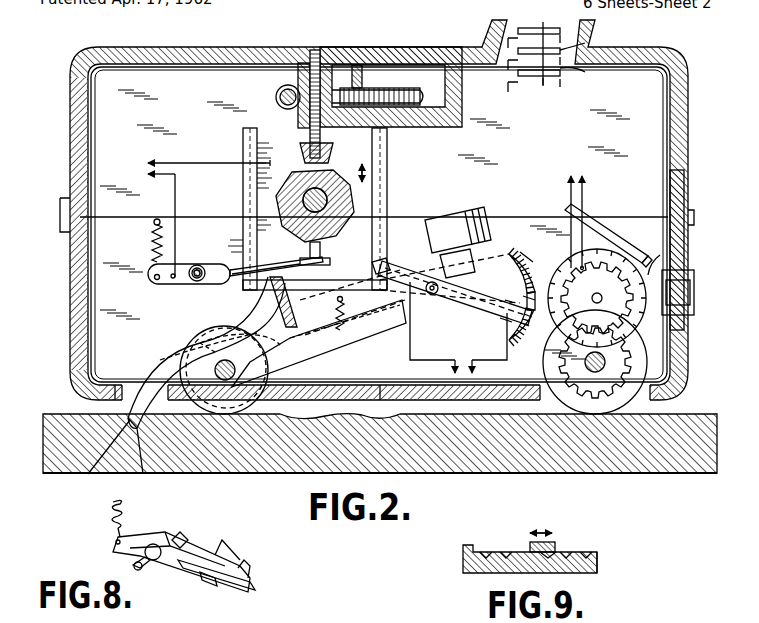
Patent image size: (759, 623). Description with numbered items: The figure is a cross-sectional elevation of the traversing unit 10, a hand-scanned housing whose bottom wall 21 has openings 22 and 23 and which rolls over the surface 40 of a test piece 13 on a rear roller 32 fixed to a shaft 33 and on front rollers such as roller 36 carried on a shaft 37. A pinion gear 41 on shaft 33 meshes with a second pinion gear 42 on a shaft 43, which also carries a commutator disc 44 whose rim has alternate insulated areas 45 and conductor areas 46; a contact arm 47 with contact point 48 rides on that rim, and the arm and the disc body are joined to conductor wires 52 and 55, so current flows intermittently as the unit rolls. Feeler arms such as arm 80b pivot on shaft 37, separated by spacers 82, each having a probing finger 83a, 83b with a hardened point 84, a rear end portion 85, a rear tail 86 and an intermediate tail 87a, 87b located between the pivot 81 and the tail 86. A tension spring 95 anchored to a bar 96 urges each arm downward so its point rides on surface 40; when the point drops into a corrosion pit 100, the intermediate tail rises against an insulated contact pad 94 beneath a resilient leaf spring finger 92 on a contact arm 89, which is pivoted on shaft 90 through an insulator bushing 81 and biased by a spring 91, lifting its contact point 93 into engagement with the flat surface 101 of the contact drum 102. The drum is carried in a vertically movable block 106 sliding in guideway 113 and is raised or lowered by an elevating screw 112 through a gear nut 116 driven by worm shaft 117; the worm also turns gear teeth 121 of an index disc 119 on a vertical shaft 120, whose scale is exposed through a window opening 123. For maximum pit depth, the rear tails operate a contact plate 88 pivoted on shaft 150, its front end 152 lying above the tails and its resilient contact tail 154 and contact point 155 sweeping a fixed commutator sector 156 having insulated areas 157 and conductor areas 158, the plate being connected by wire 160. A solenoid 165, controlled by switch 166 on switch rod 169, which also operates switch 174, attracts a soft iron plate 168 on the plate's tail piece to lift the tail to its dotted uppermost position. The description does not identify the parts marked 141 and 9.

In FIG. 2, the traversing unit 10 is at (68, 290).
In FIG. 2, the test piece 13 is at (455, 464).
In FIG. 2, the bottom wall 21 is at (395, 392).
In FIG. 2, the opening 22 is at (118, 385).
In FIG. 2, the opening 23 is at (640, 398).
In FIG. 2, the rear wheel roller 32 is at (544, 368).
In FIG. 2, the shaft 33 is at (595, 354).
In FIG. 2, the front wheel roller 36 is at (222, 418).
In FIG. 2, the shaft 37 is at (240, 345).
In FIG. 2, the surface 40 is at (708, 414).
In FIG. 2, the pinion gear 41 is at (622, 360).
In FIG. 2, the second pinion gear 42 is at (664, 312).
In FIG. 2, the shaft 43 is at (597, 294).
In FIG. 2, the commutator disc 44 is at (658, 256).
In FIG. 2, the insulated areas 45 is at (538, 272).
In FIG. 2, the conductor areas 46 is at (552, 274).
In FIG. 2, the contact arm 47 is at (604, 232).
In FIG. 2, the contact point 48 is at (645, 258).
In FIG. 2, the conductor wire 52 is at (568, 196).
In FIG. 2, the conductor wire 55 is at (584, 186).
In FIG. 2, the feeler arm 80b is at (185, 345).
In FIG. 2, the pivot 81 is at (192, 281).
In FIG. 8, the pivot 81 is at (155, 562).
In FIG. 2, the spacers 82 is at (225, 360).
In FIG. 2, the probing finger 83a is at (150, 372).
In FIG. 2, the probing finger 83b is at (168, 352).
In FIG. 2, the hardened point 84 is at (142, 462).
In FIG. 2, the rear end portion 85 is at (340, 350).
In FIG. 2, the rear tail portion 86 is at (410, 276).
In FIG. 2, the intermediate tail portion 87a is at (262, 283).
In FIG. 2, the intermediate tail portion 87b is at (294, 295).
In FIG. 2, the contact plate 88 is at (400, 278).
In FIG. 2, the contact arm 89 is at (224, 264).
In FIG. 8, the contact arm 89 is at (188, 530).
In FIG. 2, the shaft 90 is at (196, 265).
In FIG. 8, the shaft 90 is at (181, 532).
In FIG. 2, the spring 91 is at (153, 246).
In FIG. 8, the spring 91 is at (112, 514).
In FIG. 2, the resilient leaf spring finger 92 is at (157, 220).
In FIG. 8, the resilient leaf spring finger 92 is at (218, 565).
In FIG. 2, the contact point 93 is at (322, 255).
In FIG. 8, the contact point 93 is at (248, 566).
In FIG. 2, the contact pad 94 is at (272, 268).
In FIG. 8, the contact pad 94 is at (208, 582).
In FIG. 2, the tension spring 95 is at (346, 314).
In FIG. 2, the bar 96 is at (344, 299).
In FIG. 2, the corrosion pit 100 is at (97, 458).
In FIG. 2, the flat surface 101 is at (330, 238).
In FIG. 2, the contact drum 102 is at (336, 176).
In FIG. 2, the vertically movable block 106 is at (278, 150).
In FIG. 2, the threaded elevating screw 112 is at (315, 58).
In FIG. 2, the vertical guideway 113 is at (387, 157).
In FIG. 2, the gear nut 116 is at (355, 65).
In FIG. 2, the worm shaft 117 is at (285, 85).
In FIG. 2, the index disc 119 is at (376, 90).
In FIG. 2, the vertical shaft 120 is at (372, 88).
In FIG. 2, the gear teeth 121 is at (422, 96).
In FIG. 2, the window opening 123 is at (445, 65).
In FIG. 2, the terminal post 141 is at (548, 78).
In FIG. 2, the shaft 150 is at (432, 294).
In FIG. 2, the front end 152 is at (382, 262).
In FIG. 2, the resilient contact tail 154 is at (505, 310).
In FIG. 9, the resilient contact tail 154 is at (530, 546).
In FIG. 2, the contact point 155 is at (491, 336).
In FIG. 9, the contact point 155 is at (556, 545).
In FIG. 2, the commutator sector 156 is at (467, 250).
In FIG. 9, the commutator sector 156 is at (462, 576).
In FIG. 9, the insulated areas 157 is at (580, 558).
In FIG. 9, the conductor areas 158 is at (565, 560).
In FIG. 2, the wire 160 is at (468, 343).
In FIG. 2, the solenoid 165 is at (458, 226).
In FIG. 2, the switch 166 is at (586, 43).
In FIG. 2, the soft iron plate 168 is at (462, 306).
In FIG. 2, the switch rod 169 is at (570, 70).
In FIG. 2, the switch 174 is at (553, 30).
In FIG. 2, the sector gear portion 9 is at (512, 340).